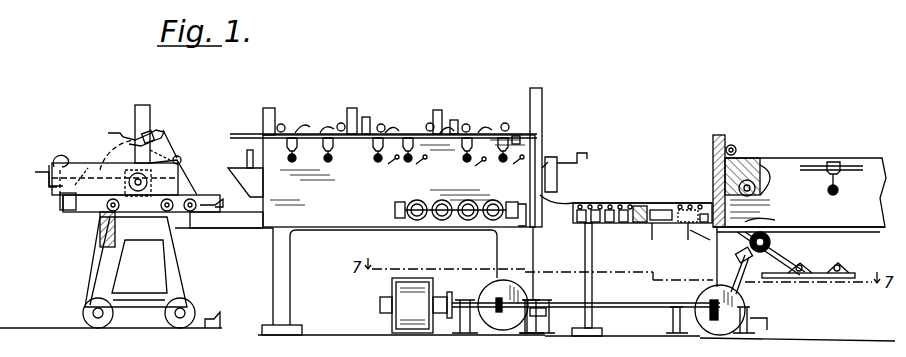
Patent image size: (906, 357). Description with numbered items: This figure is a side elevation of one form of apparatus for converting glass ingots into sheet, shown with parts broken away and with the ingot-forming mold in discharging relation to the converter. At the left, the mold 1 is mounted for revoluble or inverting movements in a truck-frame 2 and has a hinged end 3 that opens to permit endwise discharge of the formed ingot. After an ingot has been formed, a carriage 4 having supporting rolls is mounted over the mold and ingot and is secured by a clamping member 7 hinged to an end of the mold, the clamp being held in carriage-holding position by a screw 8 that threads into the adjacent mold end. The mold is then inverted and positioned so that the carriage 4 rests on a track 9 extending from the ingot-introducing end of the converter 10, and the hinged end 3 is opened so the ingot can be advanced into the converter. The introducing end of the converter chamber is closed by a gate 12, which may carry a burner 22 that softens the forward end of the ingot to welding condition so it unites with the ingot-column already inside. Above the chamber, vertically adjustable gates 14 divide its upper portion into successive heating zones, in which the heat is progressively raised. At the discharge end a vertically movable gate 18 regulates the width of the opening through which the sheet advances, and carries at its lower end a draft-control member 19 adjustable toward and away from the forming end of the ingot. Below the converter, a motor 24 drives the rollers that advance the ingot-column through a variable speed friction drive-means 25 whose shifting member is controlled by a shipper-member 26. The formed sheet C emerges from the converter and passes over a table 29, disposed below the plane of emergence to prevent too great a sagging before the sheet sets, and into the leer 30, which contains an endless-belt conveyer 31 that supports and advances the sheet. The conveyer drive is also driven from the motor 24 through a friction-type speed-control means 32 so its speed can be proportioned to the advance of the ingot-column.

The mold 1 is at (87, 166).
The truck-frame 2 is at (102, 264).
The hinged end 3 is at (150, 128).
The carriage 4 is at (190, 222).
The clamping member 7 is at (66, 206).
The screw 8 is at (52, 188).
The track 9 is at (212, 229).
The converter 10 is at (383, 229).
The gate 12 is at (262, 118).
The vertically adjustable gates 14 is at (352, 110).
The vertically movable gate 18 is at (543, 112).
The draft-control member 19 is at (550, 170).
The burner 22 is at (246, 172).
The motor 24 is at (416, 305).
The variable speed friction drive-means 25 is at (493, 291).
The shipper-member 26 is at (548, 312).
The table 29 is at (633, 225).
The leer 30 is at (805, 192).
The conveyer 31 is at (808, 268).
The speed-control means 32 is at (710, 300).
The sheet C is at (596, 203).